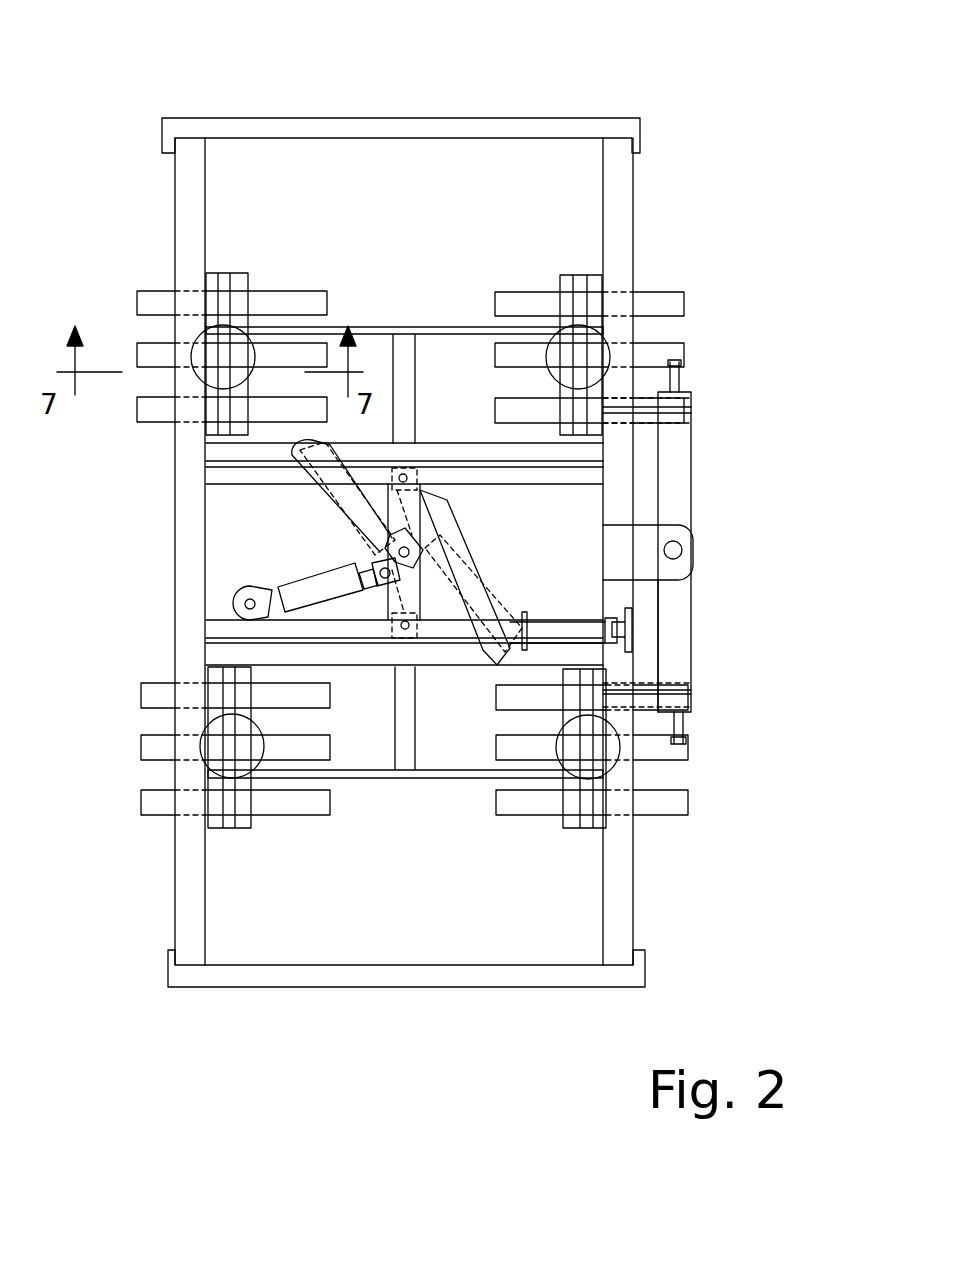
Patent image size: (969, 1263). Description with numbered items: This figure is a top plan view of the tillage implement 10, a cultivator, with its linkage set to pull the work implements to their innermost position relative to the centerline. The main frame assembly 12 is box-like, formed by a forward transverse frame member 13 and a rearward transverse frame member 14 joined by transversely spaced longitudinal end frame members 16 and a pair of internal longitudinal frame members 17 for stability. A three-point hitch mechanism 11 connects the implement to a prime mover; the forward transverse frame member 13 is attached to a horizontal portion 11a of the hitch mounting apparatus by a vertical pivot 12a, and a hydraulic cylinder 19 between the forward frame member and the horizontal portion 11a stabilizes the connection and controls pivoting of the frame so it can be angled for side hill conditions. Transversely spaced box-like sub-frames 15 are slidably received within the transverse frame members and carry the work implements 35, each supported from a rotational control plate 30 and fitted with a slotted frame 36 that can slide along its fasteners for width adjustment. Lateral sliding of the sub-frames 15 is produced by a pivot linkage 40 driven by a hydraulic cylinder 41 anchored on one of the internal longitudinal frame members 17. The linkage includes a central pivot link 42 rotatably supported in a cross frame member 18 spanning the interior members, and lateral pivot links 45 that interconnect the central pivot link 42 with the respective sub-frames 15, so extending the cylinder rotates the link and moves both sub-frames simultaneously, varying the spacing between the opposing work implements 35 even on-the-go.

The tillage implement 10 is at (627, 78).
The three-point hitch mechanism 11 is at (691, 455).
The horizontal portion 11a is at (680, 615).
The main frame assembly 12 is at (633, 153).
The vertical pivot 12a is at (682, 550).
The forward transverse frame member 13 is at (633, 247).
The rearward transverse frame member 14 is at (175, 248).
The sub-frames 15 is at (418, 327).
The longitudinal end frame members 16 is at (535, 118).
The internal longitudinal frame members 17 is at (535, 484).
The cross frame member 18 is at (433, 622).
The hydraulic cylinder 19 is at (586, 618).
The rotational control plate 30 is at (255, 357).
The work implements 35 is at (290, 291).
The slotted frame 36 is at (233, 273).
The pivot linkage 40 is at (238, 550).
The hydraulic cylinder 41 is at (277, 585).
The central pivot link 42 is at (448, 598).
The lateral pivot links 45 is at (338, 540).